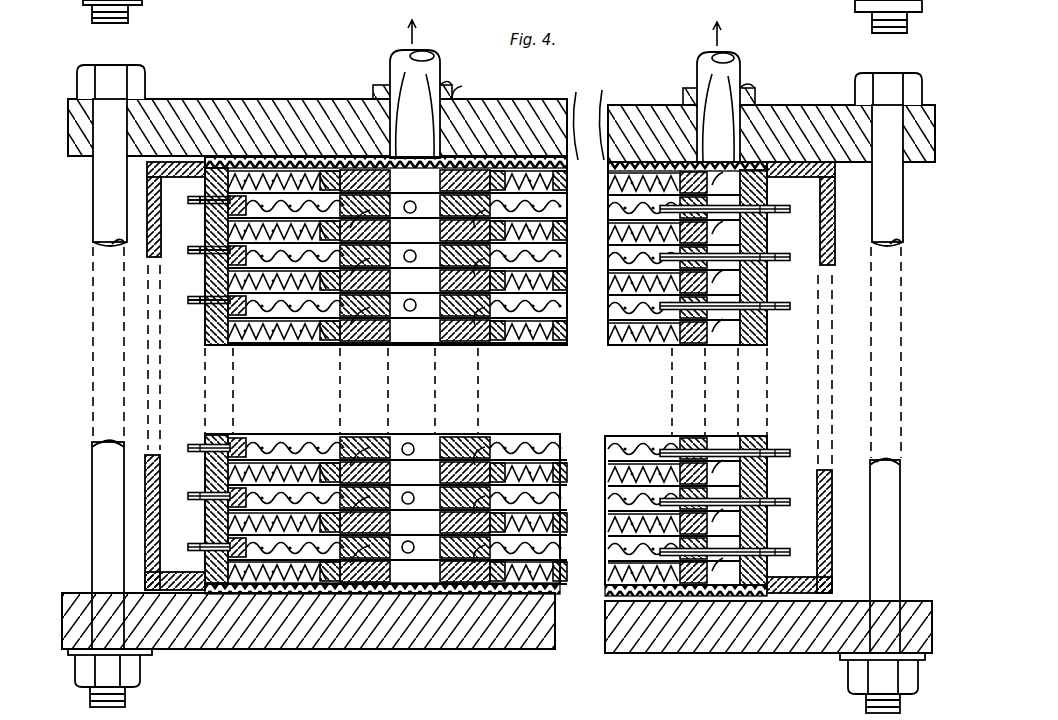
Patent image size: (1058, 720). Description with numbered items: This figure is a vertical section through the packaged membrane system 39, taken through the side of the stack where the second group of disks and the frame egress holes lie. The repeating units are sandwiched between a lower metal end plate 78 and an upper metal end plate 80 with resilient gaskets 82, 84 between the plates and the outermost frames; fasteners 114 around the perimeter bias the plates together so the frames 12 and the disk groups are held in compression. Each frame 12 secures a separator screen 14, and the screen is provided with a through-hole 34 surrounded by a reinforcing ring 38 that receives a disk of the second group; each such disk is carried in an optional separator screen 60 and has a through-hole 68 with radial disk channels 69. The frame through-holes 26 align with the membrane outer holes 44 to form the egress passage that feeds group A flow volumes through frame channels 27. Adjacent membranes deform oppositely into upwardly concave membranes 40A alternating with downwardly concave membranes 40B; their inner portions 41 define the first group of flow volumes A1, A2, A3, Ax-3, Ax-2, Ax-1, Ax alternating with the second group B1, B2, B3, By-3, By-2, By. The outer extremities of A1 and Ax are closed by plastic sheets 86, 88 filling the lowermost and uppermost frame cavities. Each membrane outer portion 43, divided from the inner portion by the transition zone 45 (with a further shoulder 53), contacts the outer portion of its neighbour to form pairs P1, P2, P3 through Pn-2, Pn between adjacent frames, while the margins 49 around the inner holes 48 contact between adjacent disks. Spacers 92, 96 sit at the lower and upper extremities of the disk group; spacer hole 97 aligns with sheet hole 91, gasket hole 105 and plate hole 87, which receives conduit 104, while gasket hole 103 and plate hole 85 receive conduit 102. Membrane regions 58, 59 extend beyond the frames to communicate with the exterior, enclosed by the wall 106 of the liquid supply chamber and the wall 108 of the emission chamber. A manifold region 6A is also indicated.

The metal end plate 80 is at (238, 99).
The gasket 84 is at (750, 115).
The sheet 88 is at (611, 114).
The hole 91 is at (395, 110).
The conduit 102 is at (436, 58).
The spacer hole 97 is at (395, 30).
The gasket through-hole 103 is at (450, 82).
The plate through-hole 85 is at (460, 100).
The gasket through-hole 105 is at (705, 100).
The conduit 104 is at (742, 60).
The plate through-hole 87 is at (745, 82).
The fasteners 114 is at (97, 180).
The packaged membrane system 39 is at (917, 326).
The membrane region 58 is at (200, 300).
The membrane region 59 is at (770, 307).
The wall 106 is at (165, 455).
The wall 108 is at (832, 470).
The reinforcing ring 38 is at (496, 345).
The inner through-hole 48 is at (470, 345).
The disk channels 69 is at (412, 345).
The disk through-hole 68 is at (400, 316).
The separator screen 60 is at (300, 314).
The separator screen 14 is at (531, 257).
The flow volume Ax is at (567, 184).
The flow volume By is at (567, 208).
The flow volume Ax-1 is at (567, 233).
The flow volume By-2 is at (567, 257).
The flow volume Ax-2 is at (567, 282).
The flow volume By-3 is at (567, 306).
The flow volume Ax-3 is at (567, 332).
The membrane outer through-hole 44 is at (768, 345).
The frame channels 27 is at (690, 346).
The frame through-hole 26 is at (730, 340).
The frame 12 is at (770, 292).
The contacting outer portion pair Pn is at (806, 209).
The contacting outer portion pair Pn-2 is at (790, 307).
The screen through-hole 34 is at (432, 434).
The manifold 6A is at (378, 434).
The margin 49 is at (355, 346).
The membrane inner portion 41 is at (548, 434).
The membrane 40B is at (205, 527).
The membrane 40A is at (205, 548).
The membrane outer portion 43 is at (220, 440).
The elevation transition zone 45 is at (236, 445).
The elevation transition zone 53 is at (330, 434).
The spacer 92 is at (372, 594).
The flow volume B3 is at (560, 447).
The flow volume A3 is at (560, 476).
The flow volume B2 is at (560, 500).
The flow volume A2 is at (560, 525).
The flow volume B1 is at (560, 551).
The flow volume A1 is at (560, 573).
The contacting outer portion pair P3 is at (799, 438).
The contacting outer portion pair P2 is at (799, 487).
The contacting outer portion pair P1 is at (799, 535).
The sheet 86 is at (572, 593).
The metal end plate 78 is at (678, 653).
The gasket 82 is at (604, 601).
The spacer 96 is at (346, 99).